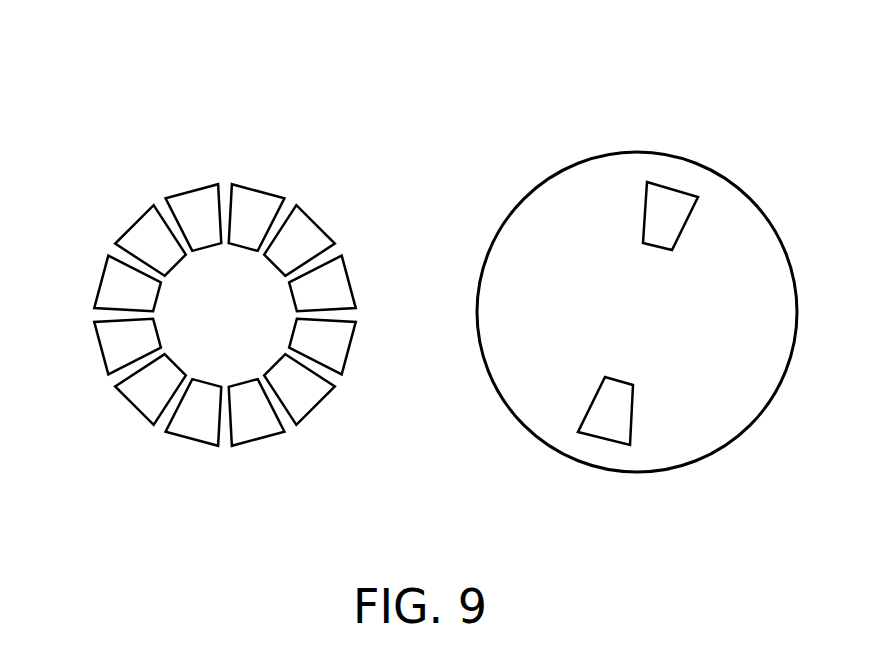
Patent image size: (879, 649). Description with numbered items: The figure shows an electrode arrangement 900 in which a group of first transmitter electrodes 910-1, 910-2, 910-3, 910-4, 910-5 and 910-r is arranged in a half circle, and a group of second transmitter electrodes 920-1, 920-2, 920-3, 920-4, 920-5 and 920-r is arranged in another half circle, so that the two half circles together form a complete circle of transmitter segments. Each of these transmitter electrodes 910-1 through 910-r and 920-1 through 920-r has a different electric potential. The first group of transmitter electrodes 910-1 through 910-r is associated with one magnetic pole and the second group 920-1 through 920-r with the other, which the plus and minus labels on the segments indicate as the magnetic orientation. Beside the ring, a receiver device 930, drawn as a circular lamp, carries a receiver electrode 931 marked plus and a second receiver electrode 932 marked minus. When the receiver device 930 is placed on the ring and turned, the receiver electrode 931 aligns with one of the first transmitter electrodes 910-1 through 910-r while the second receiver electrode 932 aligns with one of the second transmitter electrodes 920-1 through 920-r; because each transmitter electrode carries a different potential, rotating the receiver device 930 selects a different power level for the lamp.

The light sensor arrangement 900 is at (213, 93).
The first transmitter electrode 910-1 is at (259, 186).
The first transmitter electrode 910-2 is at (319, 218).
The first transmitter electrode 910-3 is at (352, 279).
The first transmitter electrode 910-4 is at (352, 351).
The first transmitter electrode 910-5 is at (319, 410).
The first transmitter electrode 910-r is at (258, 442).
The second transmitter electrode 920-1 is at (192, 442).
The second transmitter electrode 920-2 is at (131, 410).
The second transmitter electrode 920-3 is at (98, 351).
The second transmitter electrode 920-4 is at (98, 279).
The second transmitter electrode 920-5 is at (131, 218).
The second transmitter electrode 920-r is at (193, 186).
The receiver device 930 is at (743, 437).
The receiver electrode 931 is at (670, 186).
The second receiver electrode 932 is at (603, 445).